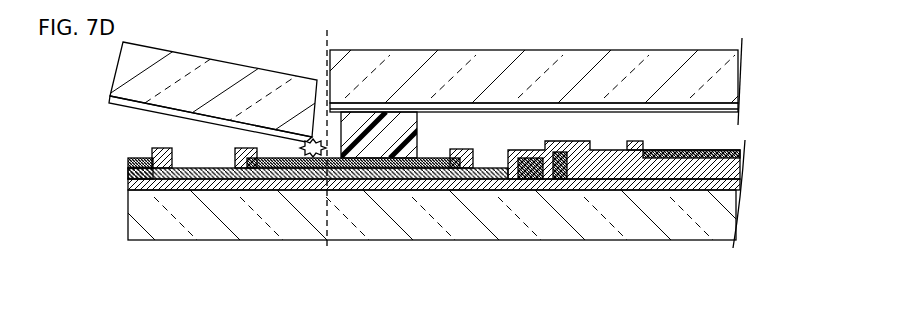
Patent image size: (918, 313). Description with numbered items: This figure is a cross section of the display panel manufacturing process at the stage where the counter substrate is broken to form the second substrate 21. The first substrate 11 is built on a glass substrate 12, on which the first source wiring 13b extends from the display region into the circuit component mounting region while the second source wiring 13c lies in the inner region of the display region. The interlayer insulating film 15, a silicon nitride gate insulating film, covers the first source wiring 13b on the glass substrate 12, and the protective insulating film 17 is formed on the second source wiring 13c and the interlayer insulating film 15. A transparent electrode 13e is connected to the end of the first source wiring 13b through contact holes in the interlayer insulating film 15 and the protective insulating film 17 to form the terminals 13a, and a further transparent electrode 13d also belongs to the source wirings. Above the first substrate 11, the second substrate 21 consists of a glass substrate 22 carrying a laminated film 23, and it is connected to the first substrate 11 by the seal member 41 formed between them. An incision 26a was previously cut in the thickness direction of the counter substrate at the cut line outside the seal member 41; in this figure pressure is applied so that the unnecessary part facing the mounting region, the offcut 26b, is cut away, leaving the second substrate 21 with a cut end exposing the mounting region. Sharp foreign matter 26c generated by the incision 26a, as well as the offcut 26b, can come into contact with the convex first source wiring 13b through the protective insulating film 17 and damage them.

The first substrate 11 is at (803, 133).
The glass substrate 12 is at (733, 225).
The terminals 13a is at (249, 151).
The first source wiring 13b is at (128, 183).
The second source wiring 13c is at (742, 170).
The transparent electrode 13d is at (645, 146).
The transparent electrode 13e is at (150, 152).
The interlayer insulating film 15 is at (742, 187).
The protective insulating film 17 is at (742, 152).
The second substrate 21 is at (571, 81).
The glass substrate 22 is at (735, 75).
The laminated film 23 is at (737, 106).
The incision 26a is at (325, 78).
The offcut 26b is at (192, 57).
The foreign matter 26c is at (303, 149).
The seal member 41 is at (417, 131).